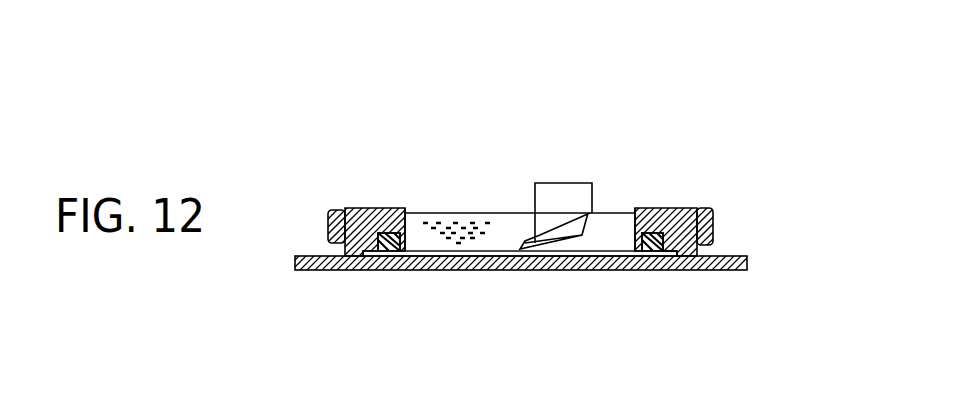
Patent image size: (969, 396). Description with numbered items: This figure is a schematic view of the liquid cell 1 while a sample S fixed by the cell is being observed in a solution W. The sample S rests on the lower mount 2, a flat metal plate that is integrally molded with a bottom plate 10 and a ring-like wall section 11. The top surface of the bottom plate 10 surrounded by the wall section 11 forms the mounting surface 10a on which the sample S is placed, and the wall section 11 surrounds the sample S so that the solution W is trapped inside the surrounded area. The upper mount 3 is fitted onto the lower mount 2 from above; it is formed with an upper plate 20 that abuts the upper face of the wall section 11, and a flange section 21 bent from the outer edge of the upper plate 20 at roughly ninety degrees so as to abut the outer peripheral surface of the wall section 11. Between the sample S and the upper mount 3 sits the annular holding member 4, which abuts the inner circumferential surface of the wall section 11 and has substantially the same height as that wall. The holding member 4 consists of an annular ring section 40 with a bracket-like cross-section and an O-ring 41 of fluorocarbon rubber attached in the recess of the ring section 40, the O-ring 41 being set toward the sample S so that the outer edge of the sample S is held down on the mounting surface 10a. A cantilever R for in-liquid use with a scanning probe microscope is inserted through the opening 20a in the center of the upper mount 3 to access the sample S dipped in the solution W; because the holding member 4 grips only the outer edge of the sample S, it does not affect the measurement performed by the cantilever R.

The liquid cell 1 is at (696, 108).
The lower mount 2 is at (752, 262).
The upper mount 3 is at (337, 204).
The holding member 4 is at (388, 204).
The annular ring section 40 is at (412, 209).
The O-ring 41 is at (385, 252).
The bottom plate 10 is at (617, 270).
The mounting surface 10a is at (687, 252).
The wall section 11 is at (690, 256).
The upper plate 20 is at (677, 208).
The opening 20a is at (633, 208).
The flange section 21 is at (697, 208).
The sample S is at (508, 213).
The solution W is at (485, 244).
The cantilever R is at (551, 193).